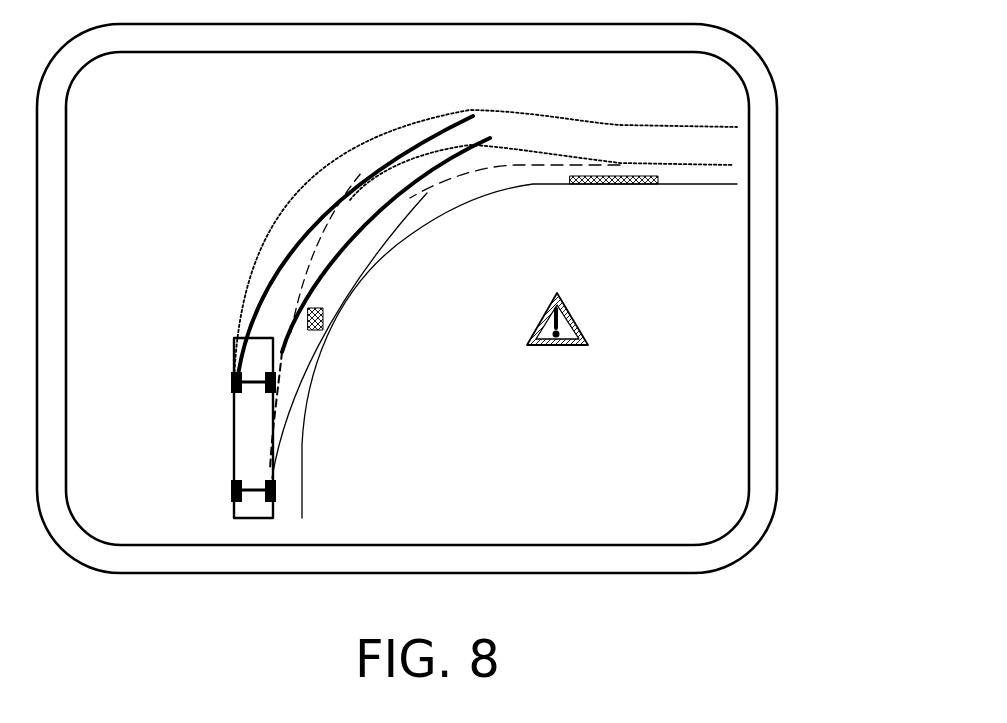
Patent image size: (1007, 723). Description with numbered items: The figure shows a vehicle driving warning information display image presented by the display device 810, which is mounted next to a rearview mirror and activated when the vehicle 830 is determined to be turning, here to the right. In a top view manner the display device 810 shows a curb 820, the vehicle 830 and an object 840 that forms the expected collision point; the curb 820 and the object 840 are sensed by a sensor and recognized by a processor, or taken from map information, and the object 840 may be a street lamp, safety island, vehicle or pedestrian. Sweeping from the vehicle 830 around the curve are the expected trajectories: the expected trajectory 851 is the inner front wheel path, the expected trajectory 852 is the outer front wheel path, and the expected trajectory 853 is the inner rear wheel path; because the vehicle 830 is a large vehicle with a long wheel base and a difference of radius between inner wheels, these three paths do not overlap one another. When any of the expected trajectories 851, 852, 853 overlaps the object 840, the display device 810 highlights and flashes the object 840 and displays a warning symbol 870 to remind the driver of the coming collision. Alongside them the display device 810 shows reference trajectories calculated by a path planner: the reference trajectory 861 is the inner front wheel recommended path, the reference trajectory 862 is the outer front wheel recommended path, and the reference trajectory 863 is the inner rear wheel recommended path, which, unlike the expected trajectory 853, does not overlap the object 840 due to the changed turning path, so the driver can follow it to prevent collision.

The display device 810 is at (768, 320).
The curb 820 is at (304, 482).
The vehicle 830 is at (247, 433).
The object 840 is at (323, 330).
The expected trajectory 851 is at (324, 273).
The expected trajectory 852 is at (268, 298).
The expected trajectory 853 is at (288, 397).
The reference trajectory 861 is at (530, 150).
The reference trajectory 862 is at (530, 113).
The reference trajectory 863 is at (318, 262).
The warning symbol 870 is at (573, 323).